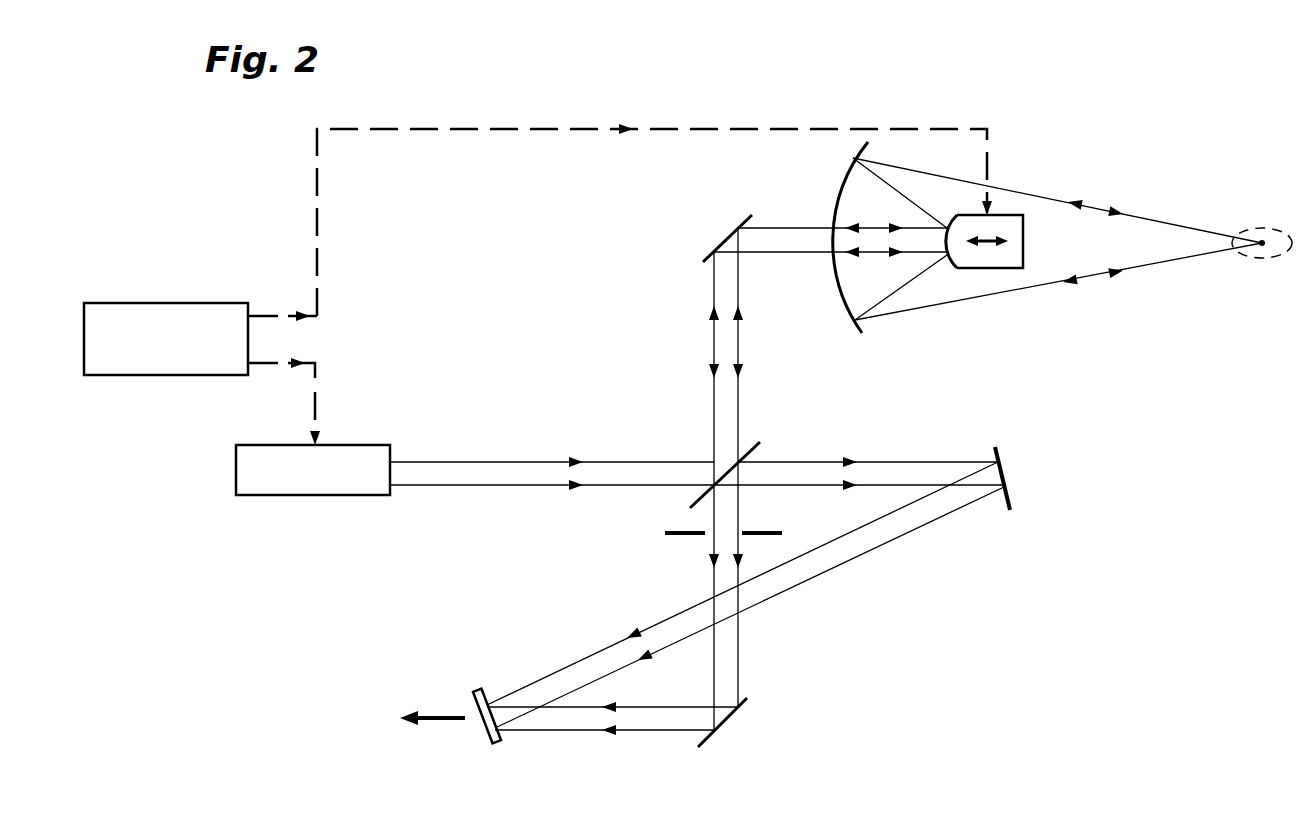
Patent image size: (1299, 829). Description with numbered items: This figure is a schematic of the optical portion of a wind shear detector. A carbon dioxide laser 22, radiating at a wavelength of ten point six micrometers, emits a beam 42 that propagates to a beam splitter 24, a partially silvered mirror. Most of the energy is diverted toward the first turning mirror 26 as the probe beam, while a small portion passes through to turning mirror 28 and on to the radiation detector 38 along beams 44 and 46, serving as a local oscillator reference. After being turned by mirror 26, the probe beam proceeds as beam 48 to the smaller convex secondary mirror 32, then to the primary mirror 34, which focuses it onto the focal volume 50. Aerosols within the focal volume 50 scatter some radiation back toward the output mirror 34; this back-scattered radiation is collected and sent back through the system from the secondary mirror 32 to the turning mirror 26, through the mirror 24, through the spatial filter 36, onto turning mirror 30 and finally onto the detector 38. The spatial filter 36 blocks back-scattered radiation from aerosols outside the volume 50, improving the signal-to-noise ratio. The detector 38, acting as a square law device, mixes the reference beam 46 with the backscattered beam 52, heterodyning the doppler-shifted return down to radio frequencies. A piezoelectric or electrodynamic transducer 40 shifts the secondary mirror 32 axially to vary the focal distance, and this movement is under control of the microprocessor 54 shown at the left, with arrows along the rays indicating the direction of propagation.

The carbon dioxide laser 22 is at (307, 497).
The beam splitter 24 is at (748, 447).
The first turning mirror 26 is at (728, 244).
The turning mirror 28 is at (1003, 450).
The turning mirror 30 is at (737, 717).
The secondary mirror 32 is at (947, 264).
The primary mirror 34 is at (863, 332).
The spatial filter 36 is at (682, 540).
The radiation detector 38 is at (488, 696).
The transducer 40 is at (1023, 235).
The beam 42 is at (533, 472).
The beam 44 is at (832, 480).
The reference beam 46 is at (825, 560).
The probe beam 48 is at (796, 238).
The focal volume 50 is at (1268, 232).
The backscattered beam 52 is at (633, 722).
The microprocessor 54 is at (176, 303).